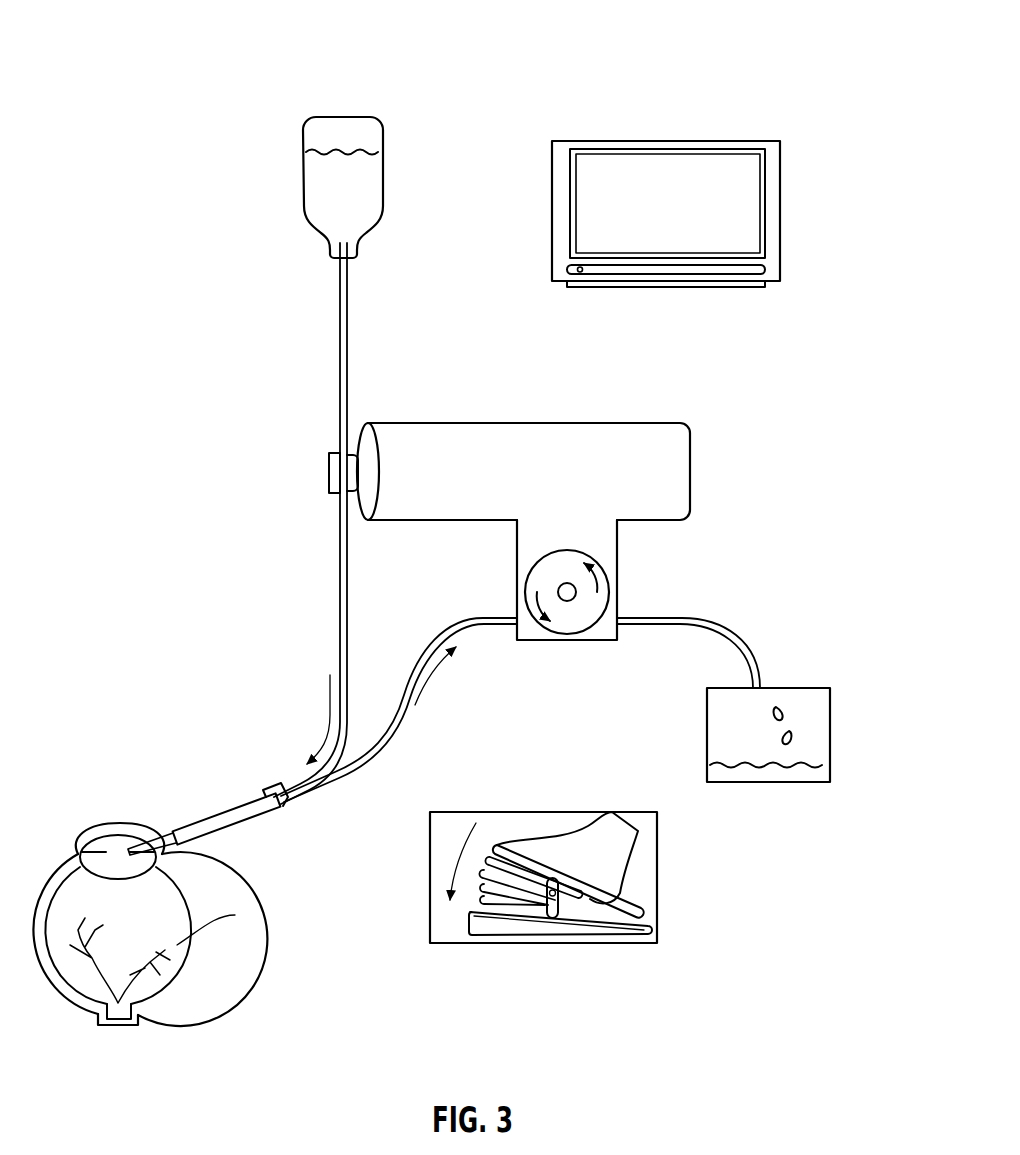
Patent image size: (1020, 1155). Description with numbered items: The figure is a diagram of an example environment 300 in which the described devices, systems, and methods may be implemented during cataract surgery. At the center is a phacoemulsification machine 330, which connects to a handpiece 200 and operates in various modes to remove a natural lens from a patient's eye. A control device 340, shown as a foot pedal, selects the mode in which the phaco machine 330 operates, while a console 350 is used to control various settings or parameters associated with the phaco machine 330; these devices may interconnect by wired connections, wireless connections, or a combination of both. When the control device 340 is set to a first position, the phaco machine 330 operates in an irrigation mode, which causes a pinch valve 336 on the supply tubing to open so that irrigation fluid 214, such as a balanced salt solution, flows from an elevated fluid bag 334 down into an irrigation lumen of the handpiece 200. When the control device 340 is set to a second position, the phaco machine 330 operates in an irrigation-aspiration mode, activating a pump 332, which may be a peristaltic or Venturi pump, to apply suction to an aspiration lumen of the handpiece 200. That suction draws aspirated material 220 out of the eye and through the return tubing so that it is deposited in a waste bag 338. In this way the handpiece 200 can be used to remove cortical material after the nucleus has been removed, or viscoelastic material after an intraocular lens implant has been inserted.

The environment 300 is at (122, 42).
The fluid bag 334 is at (313, 182).
The irrigation fluid 214 is at (338, 653).
The pinch valve 336 is at (328, 470).
The phacoemulsification machine 330 is at (541, 433).
The pump 332 is at (612, 592).
The aspirated material 220 is at (421, 691).
The waste bag 338 is at (715, 733).
The control device 340 is at (648, 883).
The console 350 is at (783, 207).
The handpiece 200 is at (250, 805).